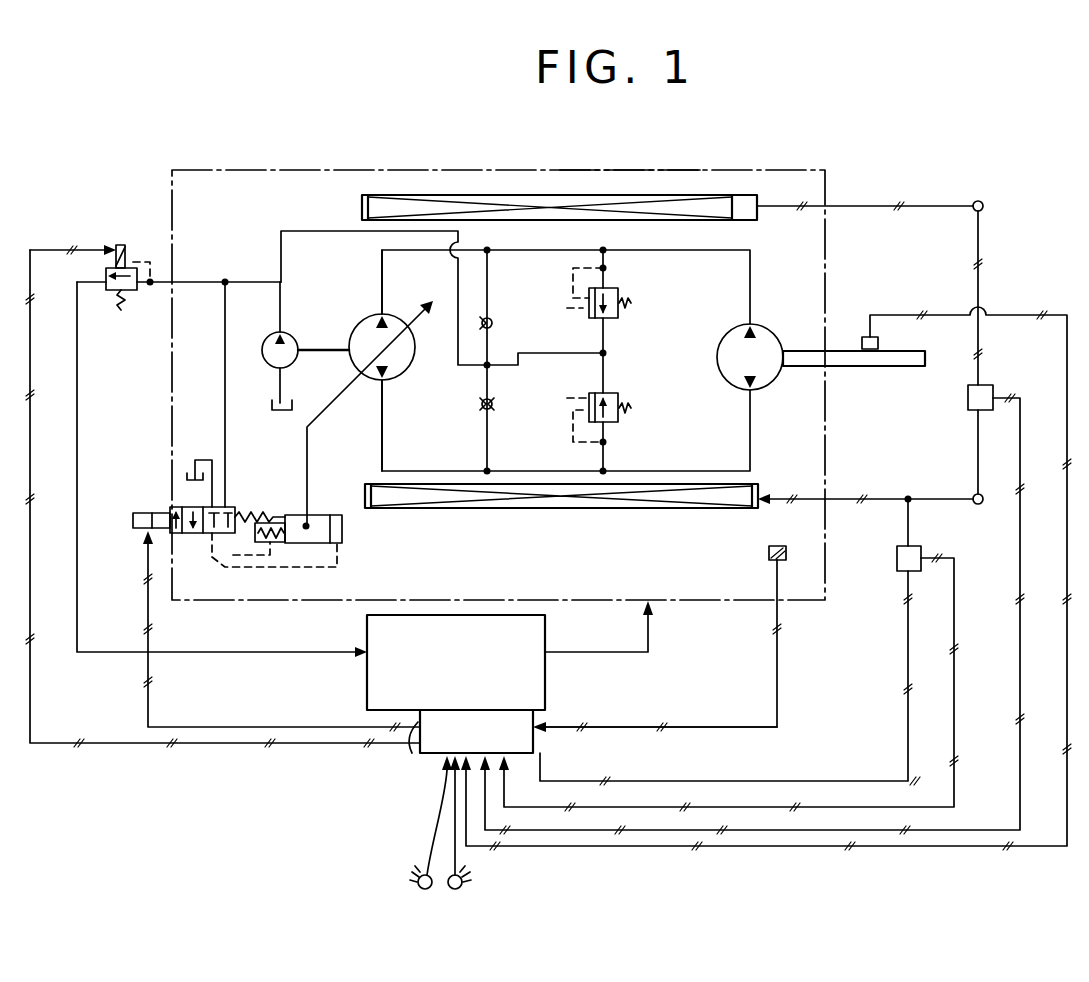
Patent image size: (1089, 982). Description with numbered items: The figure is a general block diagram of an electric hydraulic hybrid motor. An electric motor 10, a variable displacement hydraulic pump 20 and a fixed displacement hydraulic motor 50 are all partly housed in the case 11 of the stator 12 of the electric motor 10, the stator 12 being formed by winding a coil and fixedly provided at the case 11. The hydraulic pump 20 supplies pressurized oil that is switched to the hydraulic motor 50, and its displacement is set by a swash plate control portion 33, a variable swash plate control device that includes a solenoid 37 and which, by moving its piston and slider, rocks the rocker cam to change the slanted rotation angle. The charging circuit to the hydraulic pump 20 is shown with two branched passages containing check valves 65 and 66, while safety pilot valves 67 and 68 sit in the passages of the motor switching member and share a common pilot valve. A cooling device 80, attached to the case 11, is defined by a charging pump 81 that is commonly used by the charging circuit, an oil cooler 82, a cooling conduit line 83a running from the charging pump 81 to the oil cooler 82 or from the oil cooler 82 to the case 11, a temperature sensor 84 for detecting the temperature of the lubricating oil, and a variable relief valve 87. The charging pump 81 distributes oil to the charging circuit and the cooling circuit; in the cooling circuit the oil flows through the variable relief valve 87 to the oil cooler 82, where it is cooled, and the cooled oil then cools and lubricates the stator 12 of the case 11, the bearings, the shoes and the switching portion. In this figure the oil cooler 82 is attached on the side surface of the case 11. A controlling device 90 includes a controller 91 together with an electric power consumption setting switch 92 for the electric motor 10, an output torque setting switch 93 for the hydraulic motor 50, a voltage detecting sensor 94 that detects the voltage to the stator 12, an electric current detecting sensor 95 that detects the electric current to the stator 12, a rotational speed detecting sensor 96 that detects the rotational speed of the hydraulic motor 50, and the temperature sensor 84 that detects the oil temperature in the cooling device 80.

The electric motor 10 is at (503, 180).
The case 11 is at (612, 168).
The stator 12 is at (739, 201).
The variable displacement hydraulic pump 20 is at (350, 323).
The swash plate control portion 33 is at (342, 533).
The solenoid 37 is at (143, 512).
The fixed displacement hydraulic motor 50 is at (762, 322).
The check valve 65 is at (494, 319).
The check valve 66 is at (494, 400).
The safety pilot valve 67 is at (619, 292).
The safety pilot valve 68 is at (619, 427).
The cooling device 80 is at (412, 786).
The charging pump 81 is at (267, 340).
The oil cooler 82 is at (367, 685).
The cooling conduit line 83a is at (633, 653).
The temperature sensor 84 is at (769, 554).
The variable relief valve 87 is at (121, 244).
The controlling device 90 is at (538, 747).
The controller 91 is at (537, 717).
The electric power consumption setting switch 92 is at (420, 889).
The output torque setting switch 93 is at (462, 889).
The voltage detecting sensor 94 is at (994, 391).
The electric current detecting sensor 95 is at (921, 549).
The rotational speed detecting sensor 96 is at (866, 337).